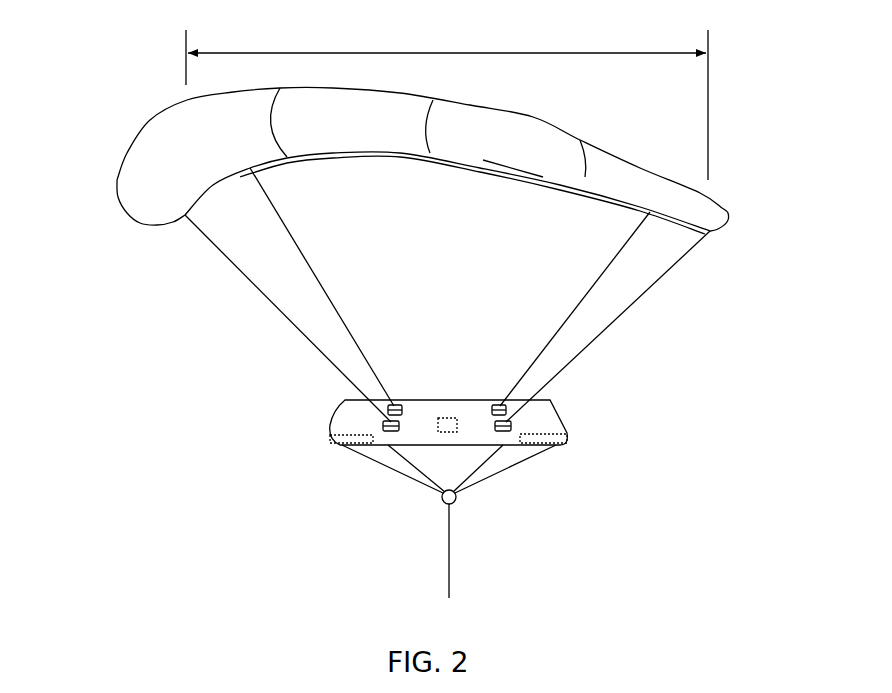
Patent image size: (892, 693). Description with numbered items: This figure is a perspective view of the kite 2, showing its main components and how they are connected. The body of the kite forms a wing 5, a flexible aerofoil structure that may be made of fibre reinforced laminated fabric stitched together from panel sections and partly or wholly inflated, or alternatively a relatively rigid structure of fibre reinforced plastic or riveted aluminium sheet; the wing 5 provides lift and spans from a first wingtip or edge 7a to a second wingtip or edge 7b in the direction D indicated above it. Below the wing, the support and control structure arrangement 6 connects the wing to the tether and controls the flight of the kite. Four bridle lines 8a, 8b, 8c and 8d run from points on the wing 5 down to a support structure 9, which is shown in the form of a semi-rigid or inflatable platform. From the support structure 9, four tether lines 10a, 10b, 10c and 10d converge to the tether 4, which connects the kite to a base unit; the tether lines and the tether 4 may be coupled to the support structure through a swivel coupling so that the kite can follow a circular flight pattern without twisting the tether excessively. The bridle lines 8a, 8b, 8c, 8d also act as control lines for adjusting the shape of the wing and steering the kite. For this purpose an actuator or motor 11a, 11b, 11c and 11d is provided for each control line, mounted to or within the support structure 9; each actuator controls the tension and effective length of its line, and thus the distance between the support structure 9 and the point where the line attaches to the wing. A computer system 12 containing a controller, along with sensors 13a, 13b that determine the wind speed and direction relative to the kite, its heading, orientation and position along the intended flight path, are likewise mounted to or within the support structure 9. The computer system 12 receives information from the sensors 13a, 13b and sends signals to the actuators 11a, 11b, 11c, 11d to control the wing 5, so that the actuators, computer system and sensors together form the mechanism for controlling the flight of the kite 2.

The kite 2 is at (558, 582).
The tether 4 is at (447, 585).
The wing 5 is at (123, 213).
The support and control structure arrangement 6 is at (147, 390).
The first wingtip 7a is at (120, 135).
The second wingtip 7b is at (732, 195).
The bridle line 8a is at (257, 288).
The bridle line 8b is at (635, 305).
The bridle line 8c is at (325, 290).
The bridle line 8d is at (592, 287).
The support structure 9 is at (342, 400).
The tether line 10a is at (396, 470).
The tether line 10b is at (485, 478).
The tether line 10c is at (420, 474).
The tether line 10d is at (504, 446).
The actuator 11a is at (388, 431).
The actuator 11b is at (512, 431).
The actuator 11c is at (392, 405).
The actuator 11d is at (498, 406).
The computer system 12 is at (437, 417).
The sensor 13a is at (352, 436).
The sensor 13b is at (553, 433).
The direction D is at (447, 105).